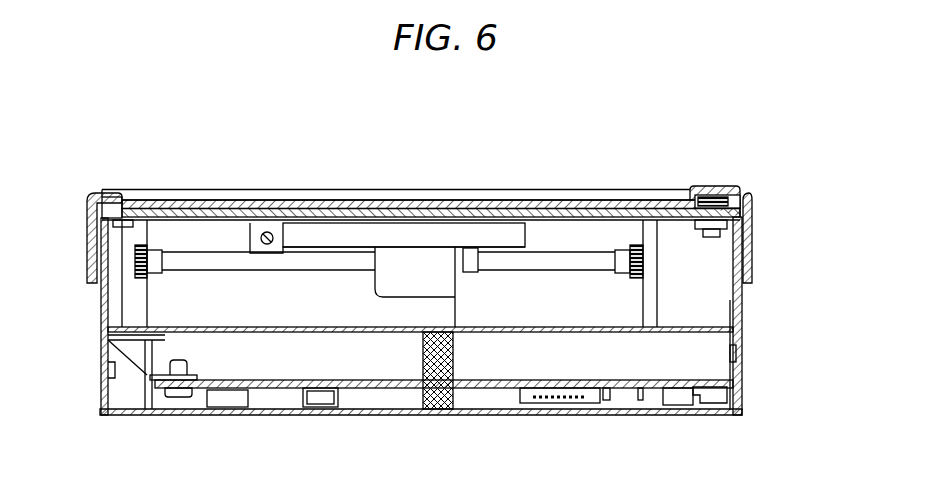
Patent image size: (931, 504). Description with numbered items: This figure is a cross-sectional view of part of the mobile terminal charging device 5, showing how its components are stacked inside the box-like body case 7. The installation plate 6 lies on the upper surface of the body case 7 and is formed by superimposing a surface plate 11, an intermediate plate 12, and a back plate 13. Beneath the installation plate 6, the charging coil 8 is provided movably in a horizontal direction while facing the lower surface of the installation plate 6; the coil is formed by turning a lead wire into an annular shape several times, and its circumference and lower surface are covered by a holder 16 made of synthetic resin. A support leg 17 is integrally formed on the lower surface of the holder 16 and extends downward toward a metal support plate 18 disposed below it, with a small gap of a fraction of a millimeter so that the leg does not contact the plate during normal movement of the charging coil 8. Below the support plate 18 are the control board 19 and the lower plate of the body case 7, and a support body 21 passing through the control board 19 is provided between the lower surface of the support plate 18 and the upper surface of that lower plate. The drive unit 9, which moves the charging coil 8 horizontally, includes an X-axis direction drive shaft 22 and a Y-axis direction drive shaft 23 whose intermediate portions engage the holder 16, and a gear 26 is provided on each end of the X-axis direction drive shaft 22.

The mobile terminal charging device 5 is at (427, 157).
The installation plate 6 is at (450, 204).
The body case 7 is at (220, 413).
The charging coil 8 is at (312, 247).
The drive unit 9 is at (187, 257).
The surface plate 11 is at (513, 204).
The intermediate plate 12 is at (563, 205).
The back plate 13 is at (630, 205).
The holder 16 is at (380, 235).
The support leg 17 is at (418, 288).
The support plate 18 is at (502, 332).
The control board 19 is at (657, 380).
The support body 21 is at (433, 409).
The X-axis direction drive shaft 22 is at (228, 263).
The Y-axis direction drive shaft 23 is at (587, 415).
The gear 26 is at (135, 252).